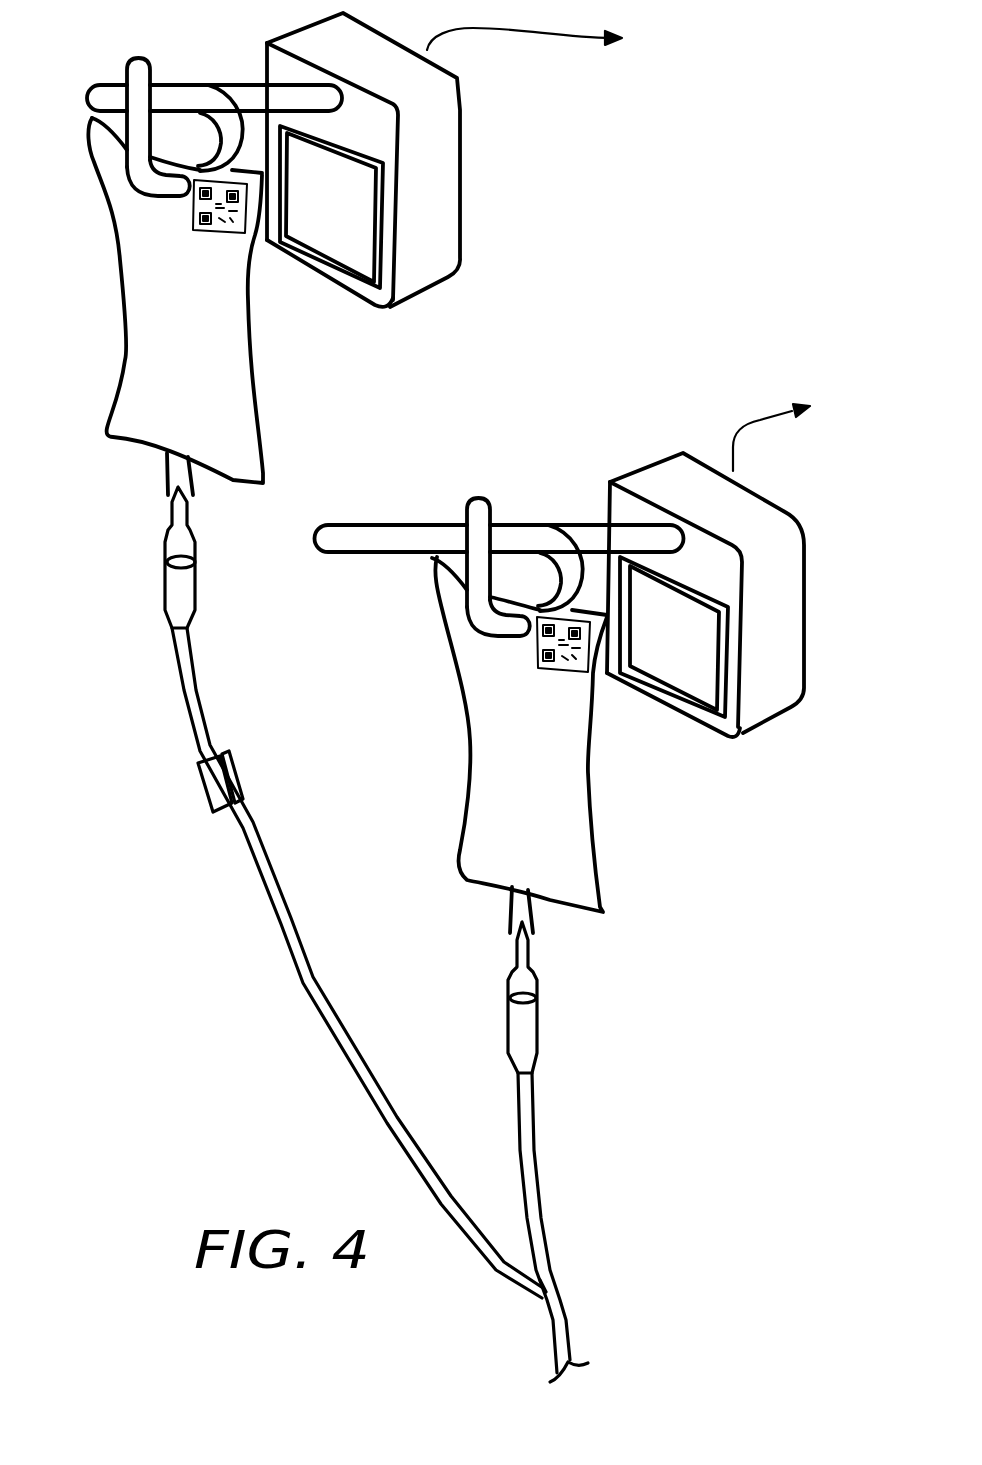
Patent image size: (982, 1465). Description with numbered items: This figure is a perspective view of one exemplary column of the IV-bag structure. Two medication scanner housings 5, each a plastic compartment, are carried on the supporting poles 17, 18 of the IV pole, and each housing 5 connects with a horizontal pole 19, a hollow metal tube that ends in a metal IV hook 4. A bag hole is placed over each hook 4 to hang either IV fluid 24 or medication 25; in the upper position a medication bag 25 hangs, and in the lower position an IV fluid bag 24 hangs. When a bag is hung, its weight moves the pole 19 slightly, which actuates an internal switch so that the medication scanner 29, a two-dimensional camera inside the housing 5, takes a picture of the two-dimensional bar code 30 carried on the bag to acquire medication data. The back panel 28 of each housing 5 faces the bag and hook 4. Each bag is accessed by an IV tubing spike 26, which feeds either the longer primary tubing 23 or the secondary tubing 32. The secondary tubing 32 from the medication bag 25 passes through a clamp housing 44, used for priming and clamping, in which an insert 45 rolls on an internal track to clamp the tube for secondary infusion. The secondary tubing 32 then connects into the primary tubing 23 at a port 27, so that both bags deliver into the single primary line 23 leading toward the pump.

The IV hook 4 is at (148, 176).
The medication scanner housing 5 is at (580, 393).
The supporting pole 17 is at (612, 72).
The supporting pole 18 is at (813, 407).
The horizontal pole 19 is at (243, 97).
The primary IV tubing 23 is at (596, 1227).
The IV fluid bag 24 is at (523, 745).
The medication bag 25 is at (123, 283).
The IV tubing spike 26 is at (167, 500).
The port 27 is at (548, 1291).
The back panel 28 is at (733, 727).
The medication scanner (2D camera) 29 is at (707, 650).
The 2D bar code 30 is at (538, 650).
The secondary tubing 32 is at (320, 963).
The clamp housing 44 is at (205, 775).
The clamp insert 45 is at (210, 807).